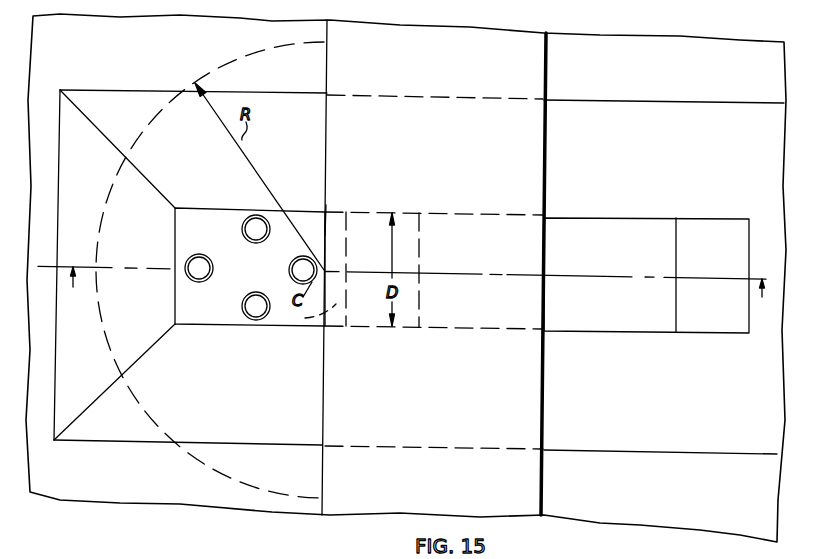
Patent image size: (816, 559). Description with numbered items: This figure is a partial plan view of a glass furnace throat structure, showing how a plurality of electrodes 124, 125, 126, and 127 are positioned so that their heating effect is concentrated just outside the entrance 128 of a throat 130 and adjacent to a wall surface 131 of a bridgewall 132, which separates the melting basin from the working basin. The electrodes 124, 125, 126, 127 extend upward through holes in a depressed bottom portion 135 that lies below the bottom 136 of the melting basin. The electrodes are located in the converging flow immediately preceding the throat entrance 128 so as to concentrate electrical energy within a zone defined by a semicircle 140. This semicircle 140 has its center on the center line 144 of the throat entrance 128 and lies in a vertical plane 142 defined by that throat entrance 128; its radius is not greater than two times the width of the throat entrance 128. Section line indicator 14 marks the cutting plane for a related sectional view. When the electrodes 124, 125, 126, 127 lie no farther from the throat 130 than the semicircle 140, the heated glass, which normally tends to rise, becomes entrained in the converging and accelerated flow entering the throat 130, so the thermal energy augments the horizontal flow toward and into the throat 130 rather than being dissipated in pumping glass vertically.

The section line indicator 14 is at (416, 295).
The electrode 124 is at (289, 273).
The electrode 125 is at (243, 305).
The electrode 126 is at (252, 215).
The electrode 127 is at (215, 246).
The entrance 128 is at (302, 327).
The throat 130 is at (513, 230).
The wall surface 131 is at (327, 140).
The bridgewall 132 is at (337, 107).
The depressed bottom portion 135 is at (185, 298).
The bottom 136 is at (193, 489).
The semicircle 140 is at (144, 129).
The vertical plane 142 is at (322, 224).
The center line 144 is at (625, 255).